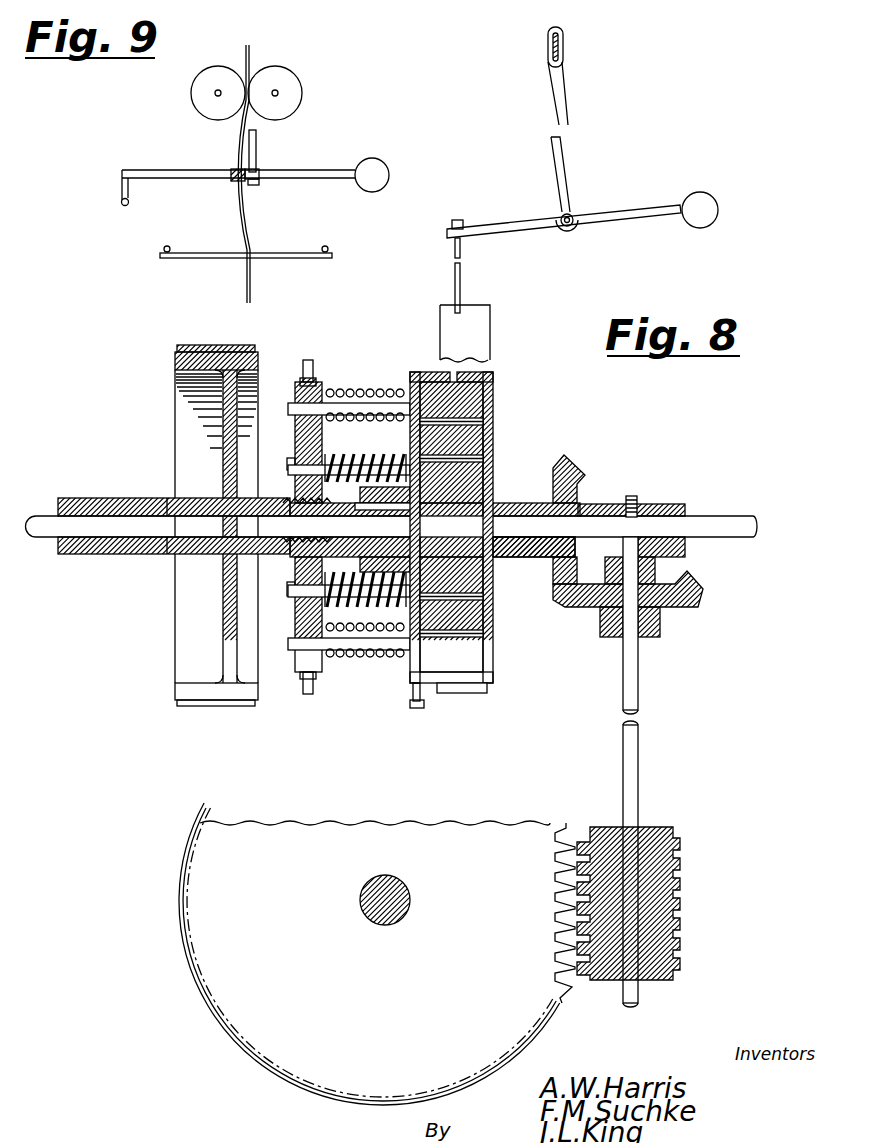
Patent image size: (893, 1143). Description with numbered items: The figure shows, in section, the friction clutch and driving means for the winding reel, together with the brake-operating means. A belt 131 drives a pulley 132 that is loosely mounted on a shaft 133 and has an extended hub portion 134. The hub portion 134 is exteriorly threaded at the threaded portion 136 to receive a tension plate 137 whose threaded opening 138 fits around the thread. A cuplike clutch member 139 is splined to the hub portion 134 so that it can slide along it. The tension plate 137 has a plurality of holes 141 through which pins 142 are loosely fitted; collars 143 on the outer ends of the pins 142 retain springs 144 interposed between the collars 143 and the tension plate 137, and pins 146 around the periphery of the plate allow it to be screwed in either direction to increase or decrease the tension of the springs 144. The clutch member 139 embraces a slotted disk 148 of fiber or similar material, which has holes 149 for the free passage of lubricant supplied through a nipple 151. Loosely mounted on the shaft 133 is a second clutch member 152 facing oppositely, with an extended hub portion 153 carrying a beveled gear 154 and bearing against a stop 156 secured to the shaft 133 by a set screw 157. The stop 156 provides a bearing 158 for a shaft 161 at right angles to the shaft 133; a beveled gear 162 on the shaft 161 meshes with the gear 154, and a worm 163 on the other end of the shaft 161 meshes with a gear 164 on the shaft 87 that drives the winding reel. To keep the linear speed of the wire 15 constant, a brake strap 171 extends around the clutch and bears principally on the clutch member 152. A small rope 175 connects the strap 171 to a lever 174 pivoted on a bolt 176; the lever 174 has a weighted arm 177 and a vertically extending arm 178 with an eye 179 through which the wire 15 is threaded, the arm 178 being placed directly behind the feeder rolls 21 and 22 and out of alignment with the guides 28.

In FIG. 9, the wire 15 is at (244, 283).
In FIG. 8, the wire 15 is at (548, 52).
In FIG. 9, the feeder roll 21 is at (303, 88).
In FIG. 9, the feeder roll 22 is at (191, 93).
In FIG. 9, the guide 28 is at (290, 259).
In FIG. 8, the shaft 87 is at (362, 905).
In FIG. 8, the belt 131 is at (183, 348).
In FIG. 8, the pulley 132 is at (185, 384).
In FIG. 8, the shaft 133 is at (42, 500).
In FIG. 8, the hub portion 134 is at (470, 510).
In FIG. 8, the threaded portion 136 is at (287, 500).
In FIG. 8, the tension plate 137 is at (322, 400).
In FIG. 8, the threaded opening 138 is at (296, 565).
In FIG. 8, the clutch member 139 is at (410, 378).
In FIG. 8, the holes 141 is at (295, 400).
In FIG. 8, the pins 142 is at (328, 400).
In FIG. 8, the collars 143 is at (370, 658).
In FIG. 8, the springs 144 is at (398, 662).
In FIG. 8, the pins 146 is at (308, 696).
In FIG. 8, the slotted disk 148 is at (472, 407).
In FIG. 8, the holes 149 is at (495, 421).
In FIG. 8, the nipple 151 is at (418, 710).
In FIG. 8, the second clutch member 152 is at (495, 380).
In FIG. 8, the hub portion 153 is at (513, 560).
In FIG. 8, the beveled gear 154 is at (568, 462).
In FIG. 8, the stop 156 is at (592, 504).
In FIG. 8, the set screw 157 is at (632, 497).
In FIG. 8, the bearing 158 is at (657, 578).
In FIG. 8, the shaft 161 is at (628, 702).
In FIG. 8, the beveled gear 162 is at (704, 594).
In FIG. 8, the worm 163 is at (680, 865).
In FIG. 8, the gear 164 is at (565, 1004).
In FIG. 8, the strap 171 is at (483, 694).
In FIG. 9, the lever 174 is at (160, 170).
In FIG. 8, the lever 174 is at (513, 228).
In FIG. 9, the rope 175 is at (122, 205).
In FIG. 8, the rope 175 is at (462, 283).
In FIG. 9, the bolt 176 is at (258, 143).
In FIG. 8, the bolt 176 is at (572, 215).
In FIG. 9, the weighted arm 177 is at (322, 180).
In FIG. 8, the weighted arm 177 is at (648, 215).
In FIG. 9, the arm 178 is at (254, 186).
In FIG. 8, the arm 178 is at (565, 110).
In FIG. 9, the eye 179 is at (236, 179).
In FIG. 8, the eye 179 is at (565, 51).